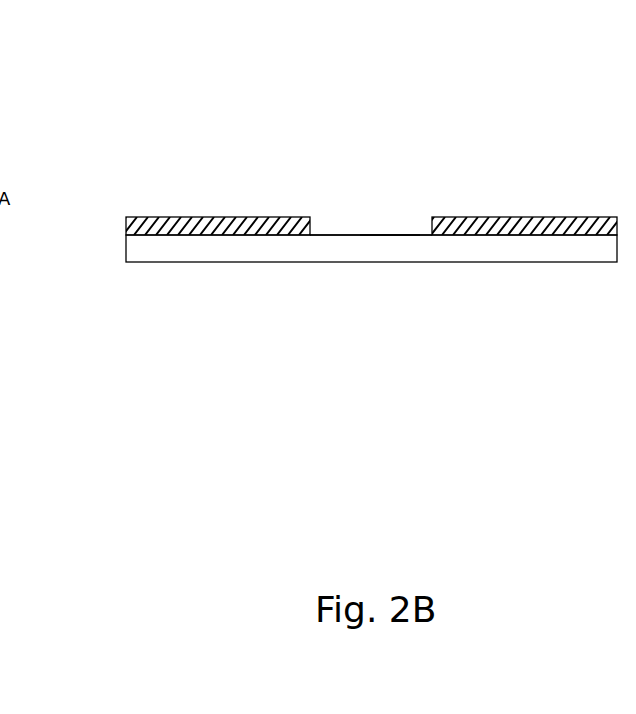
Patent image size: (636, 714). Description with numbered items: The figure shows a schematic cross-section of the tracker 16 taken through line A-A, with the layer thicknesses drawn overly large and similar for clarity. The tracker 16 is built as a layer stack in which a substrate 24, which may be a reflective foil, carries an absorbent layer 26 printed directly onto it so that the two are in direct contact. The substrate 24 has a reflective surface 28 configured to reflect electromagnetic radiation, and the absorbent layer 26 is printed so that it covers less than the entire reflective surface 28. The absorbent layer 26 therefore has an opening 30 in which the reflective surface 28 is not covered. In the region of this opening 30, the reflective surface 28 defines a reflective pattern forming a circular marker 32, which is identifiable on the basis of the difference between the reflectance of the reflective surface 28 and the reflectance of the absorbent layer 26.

The tracker 16 is at (313, 101).
The substrate 24 is at (466, 250).
The printed absorbent layer 26 is at (520, 222).
The reflective surface 28 is at (295, 235).
The opening 30 is at (372, 220).
The marker 32 is at (390, 235).